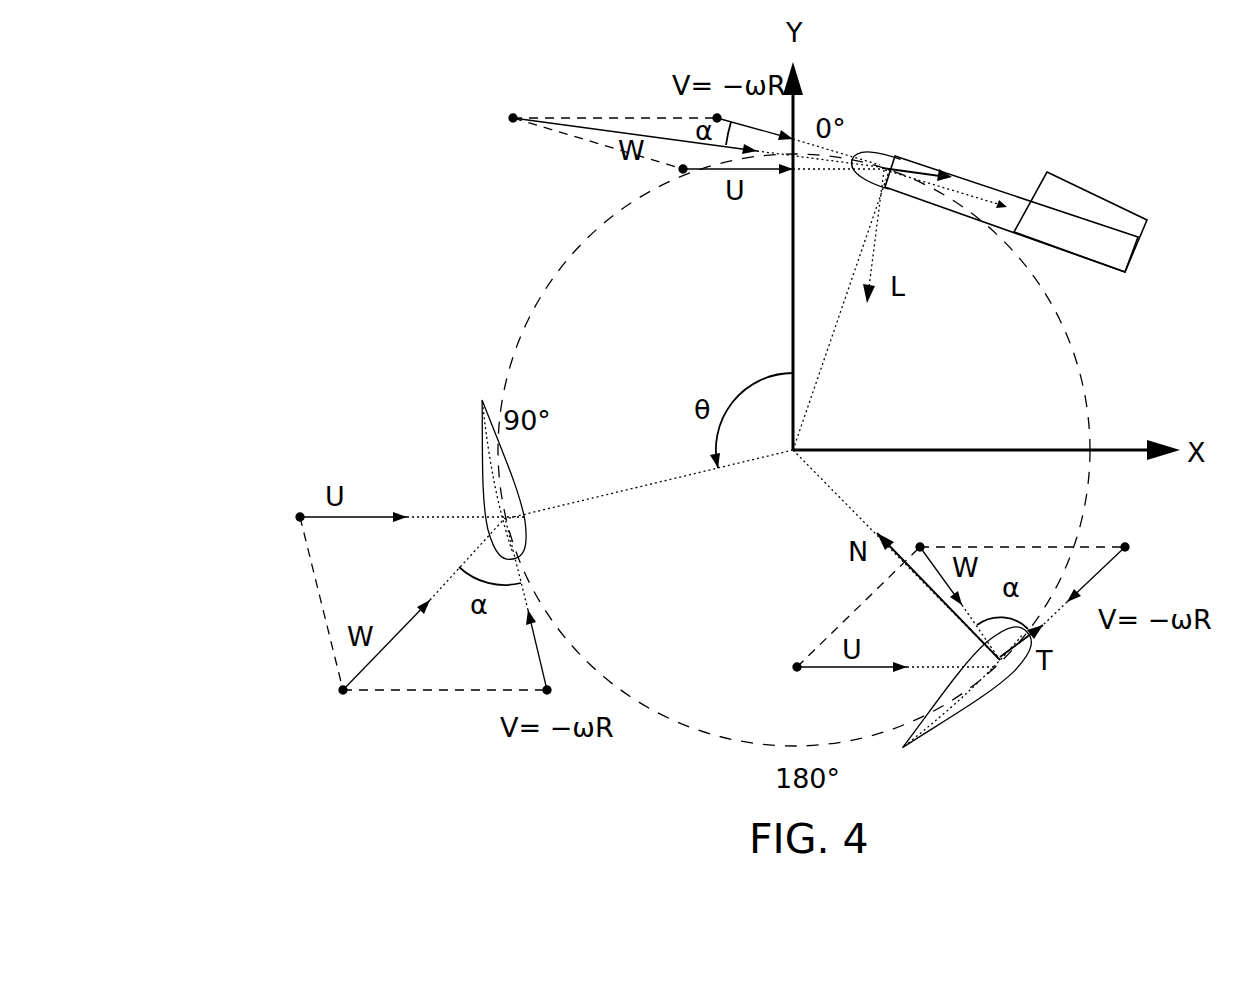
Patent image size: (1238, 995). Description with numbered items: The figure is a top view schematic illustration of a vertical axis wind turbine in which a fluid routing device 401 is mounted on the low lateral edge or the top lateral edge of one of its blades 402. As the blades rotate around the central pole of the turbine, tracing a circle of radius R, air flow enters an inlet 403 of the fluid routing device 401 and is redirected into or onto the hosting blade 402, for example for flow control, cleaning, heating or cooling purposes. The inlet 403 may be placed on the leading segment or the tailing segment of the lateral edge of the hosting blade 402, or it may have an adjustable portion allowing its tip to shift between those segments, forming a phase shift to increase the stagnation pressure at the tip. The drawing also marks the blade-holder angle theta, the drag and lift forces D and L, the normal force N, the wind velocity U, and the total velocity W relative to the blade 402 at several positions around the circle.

The fluid routing device 401 is at (917, 160).
The blade 402 is at (867, 150).
The inlet 403 is at (1018, 167).